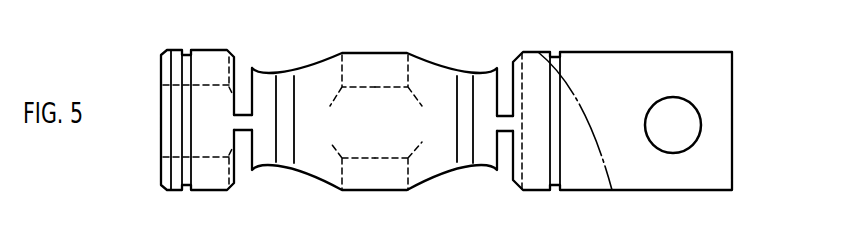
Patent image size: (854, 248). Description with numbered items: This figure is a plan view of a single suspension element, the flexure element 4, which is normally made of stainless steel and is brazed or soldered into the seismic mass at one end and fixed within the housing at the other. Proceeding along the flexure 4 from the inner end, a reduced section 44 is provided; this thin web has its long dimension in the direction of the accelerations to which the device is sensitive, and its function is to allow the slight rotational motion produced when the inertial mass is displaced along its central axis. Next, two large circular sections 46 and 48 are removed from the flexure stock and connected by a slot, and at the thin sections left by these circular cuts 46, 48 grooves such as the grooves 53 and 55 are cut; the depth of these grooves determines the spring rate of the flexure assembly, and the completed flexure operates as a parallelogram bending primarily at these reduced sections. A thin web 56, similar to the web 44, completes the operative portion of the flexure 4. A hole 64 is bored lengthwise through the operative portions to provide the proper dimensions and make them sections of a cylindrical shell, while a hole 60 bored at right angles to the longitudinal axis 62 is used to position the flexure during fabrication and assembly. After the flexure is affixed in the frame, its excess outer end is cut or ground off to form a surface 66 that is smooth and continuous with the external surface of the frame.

The flexure element 4 is at (381, 197).
The reduced section 44 is at (244, 112).
The circular section 46 is at (338, 60).
The circular section 48 is at (418, 62).
The groove 53 is at (285, 155).
The groove 55 is at (465, 155).
The thin web 56 is at (507, 113).
The hole 60 is at (688, 128).
The longitudinal axis 62 is at (721, 87).
The hole 64 is at (174, 157).
The surface 66 is at (575, 101).